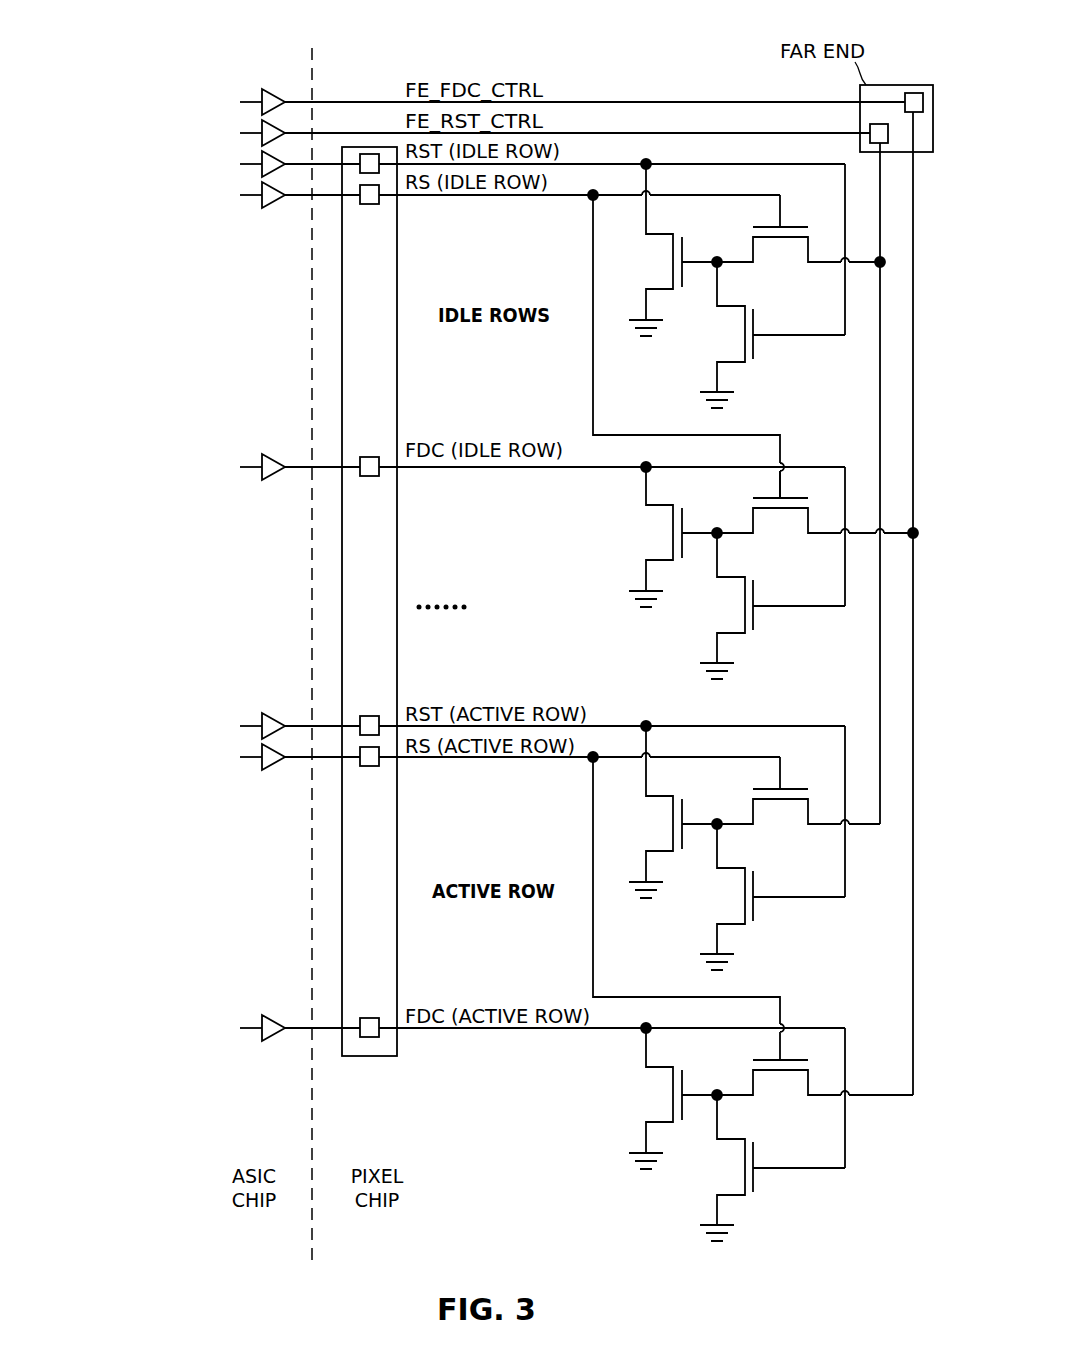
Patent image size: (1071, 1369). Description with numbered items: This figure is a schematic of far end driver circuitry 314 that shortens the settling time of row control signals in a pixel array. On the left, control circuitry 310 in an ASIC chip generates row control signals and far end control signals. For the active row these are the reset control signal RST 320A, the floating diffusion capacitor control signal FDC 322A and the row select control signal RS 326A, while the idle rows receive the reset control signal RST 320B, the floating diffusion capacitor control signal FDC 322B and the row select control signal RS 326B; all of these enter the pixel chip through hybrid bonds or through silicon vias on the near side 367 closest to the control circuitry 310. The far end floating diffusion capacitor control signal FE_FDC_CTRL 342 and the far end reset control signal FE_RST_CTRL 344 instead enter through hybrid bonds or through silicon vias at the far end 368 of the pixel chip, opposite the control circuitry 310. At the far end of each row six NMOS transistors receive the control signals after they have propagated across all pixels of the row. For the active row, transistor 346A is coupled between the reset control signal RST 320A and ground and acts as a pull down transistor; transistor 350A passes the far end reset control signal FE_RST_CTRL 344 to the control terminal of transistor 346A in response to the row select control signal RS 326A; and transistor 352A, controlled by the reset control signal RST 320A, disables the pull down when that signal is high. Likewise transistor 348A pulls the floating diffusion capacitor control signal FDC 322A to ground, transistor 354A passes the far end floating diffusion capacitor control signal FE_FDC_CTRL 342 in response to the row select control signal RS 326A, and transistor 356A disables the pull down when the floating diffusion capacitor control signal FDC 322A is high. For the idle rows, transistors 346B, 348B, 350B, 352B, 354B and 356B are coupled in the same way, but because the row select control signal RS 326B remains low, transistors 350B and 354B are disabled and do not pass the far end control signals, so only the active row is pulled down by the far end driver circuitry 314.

The control circuitry 310 is at (190, 1140).
The far end driver circuitry 314 is at (874, 81).
The reset control signal RST (active row) 320A is at (190, 724).
The reset control signal RST (idle rows) 320B is at (185, 165).
The floating diffusion capacitor control signal FDC (active row) 322A is at (190, 1028).
The floating diffusion capacitor control signal FDC (idle rows) 322B is at (186, 467).
The row select control signal RS (active row) 326A is at (190, 757).
The row select control signal RS (idle rows) 326B is at (185, 197).
The far end floating diffusion capacitor control signal FE_FDC_CTRL 342 is at (88, 101).
The far end reset control signal FE_RST_CTRL 344 is at (90, 133).
The pull down transistor 346A is at (663, 826).
The pull down transistor 346B is at (668, 264).
The pull down transistor 348A is at (664, 1097).
The pull down transistor 348B is at (668, 535).
The passthrough transistor 350A is at (777, 807).
The passthrough transistor 350B is at (781, 245).
The disable transistor 352A is at (739, 901).
The disable transistor 352B is at (744, 339).
The passthrough transistor 354A is at (773, 1078).
The passthrough transistor 354B is at (777, 516).
The disable transistor 356A is at (735, 1172).
The disable transistor 356B is at (739, 610).
The near side of the pixel chip 367 is at (398, 1050).
The far end of the pixel chip 368 is at (860, 92).